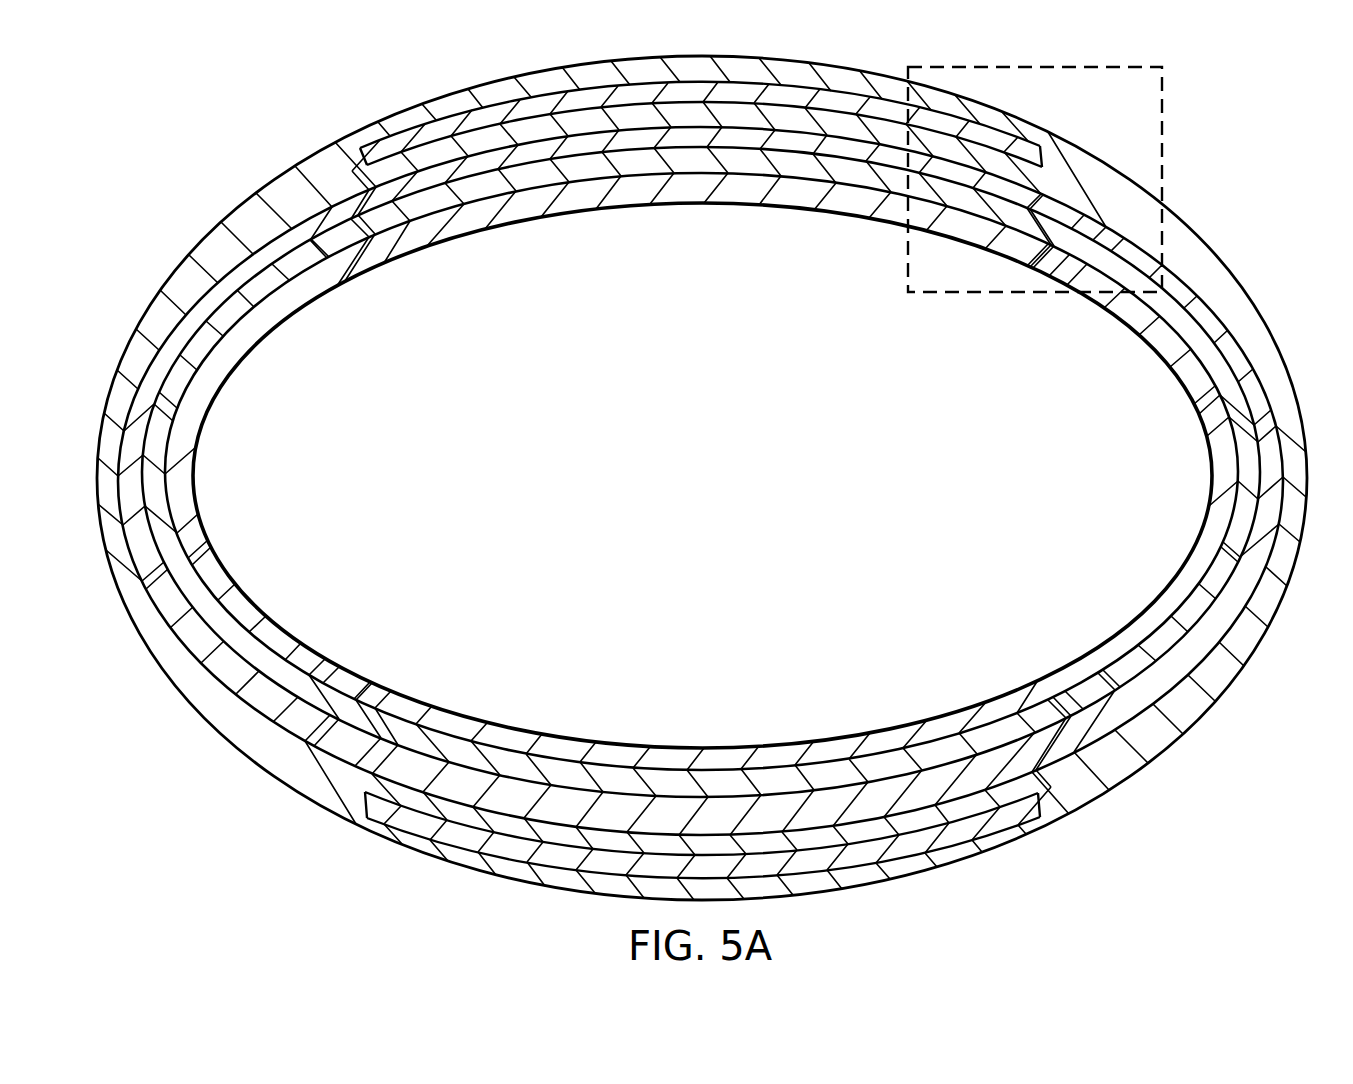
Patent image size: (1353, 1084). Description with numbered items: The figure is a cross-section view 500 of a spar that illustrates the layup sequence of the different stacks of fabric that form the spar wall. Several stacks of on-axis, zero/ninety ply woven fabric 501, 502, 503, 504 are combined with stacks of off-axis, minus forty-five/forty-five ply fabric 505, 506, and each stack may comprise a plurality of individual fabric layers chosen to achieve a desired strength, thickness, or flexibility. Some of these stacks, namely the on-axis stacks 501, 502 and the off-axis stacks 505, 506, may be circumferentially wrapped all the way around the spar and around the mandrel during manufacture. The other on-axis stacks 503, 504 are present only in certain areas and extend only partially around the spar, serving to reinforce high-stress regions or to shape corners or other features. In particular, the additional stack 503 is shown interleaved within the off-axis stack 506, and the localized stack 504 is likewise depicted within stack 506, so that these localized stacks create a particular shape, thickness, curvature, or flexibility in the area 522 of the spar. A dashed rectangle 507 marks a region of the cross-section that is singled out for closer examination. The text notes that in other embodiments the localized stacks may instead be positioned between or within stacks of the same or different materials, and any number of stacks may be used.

The cross-section view 500 is at (702, 478).
The on-axis fabric stack 501 is at (447, 230).
The on-axis fabric stack 502 is at (317, 225).
The localized on-axis fabric stack 503 is at (413, 135).
The localized on-axis fabric stack 504 is at (950, 835).
The off-axis fabric stack 505 is at (470, 762).
The off-axis fabric stack 506 is at (310, 792).
The detail region 507 is at (1172, 122).
The area of the spar 522 is at (637, 234).